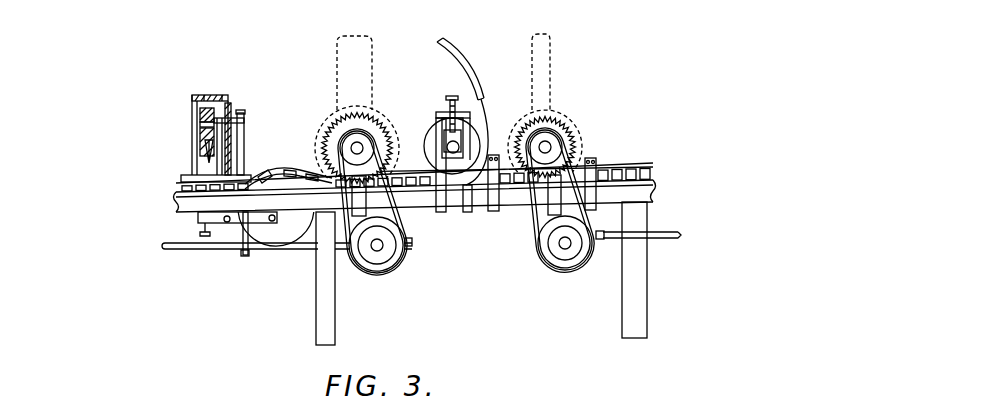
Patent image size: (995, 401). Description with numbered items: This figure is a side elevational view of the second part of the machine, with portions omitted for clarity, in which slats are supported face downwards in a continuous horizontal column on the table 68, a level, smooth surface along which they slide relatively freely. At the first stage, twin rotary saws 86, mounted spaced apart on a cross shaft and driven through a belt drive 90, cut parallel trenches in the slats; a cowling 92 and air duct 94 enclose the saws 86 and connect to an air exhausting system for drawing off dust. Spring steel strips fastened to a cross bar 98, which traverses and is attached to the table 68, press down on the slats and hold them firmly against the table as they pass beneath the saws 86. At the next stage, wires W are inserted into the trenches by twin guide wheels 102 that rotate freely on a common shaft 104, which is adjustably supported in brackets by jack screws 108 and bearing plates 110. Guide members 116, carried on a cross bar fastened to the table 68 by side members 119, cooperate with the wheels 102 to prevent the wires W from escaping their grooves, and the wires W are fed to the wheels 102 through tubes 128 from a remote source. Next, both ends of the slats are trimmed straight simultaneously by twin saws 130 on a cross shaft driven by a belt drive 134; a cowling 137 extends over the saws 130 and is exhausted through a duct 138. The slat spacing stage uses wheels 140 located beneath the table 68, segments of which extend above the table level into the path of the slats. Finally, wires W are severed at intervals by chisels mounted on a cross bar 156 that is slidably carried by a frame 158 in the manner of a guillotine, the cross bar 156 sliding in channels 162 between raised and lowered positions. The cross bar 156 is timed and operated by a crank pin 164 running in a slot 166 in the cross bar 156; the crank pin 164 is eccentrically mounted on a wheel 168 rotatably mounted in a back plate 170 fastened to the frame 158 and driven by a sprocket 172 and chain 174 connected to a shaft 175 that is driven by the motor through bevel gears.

The table 68 is at (176, 194).
The rotary saws 86 is at (569, 143).
The belt drive 90 is at (540, 218).
The cowling 92 is at (551, 114).
The air duct 94 is at (550, 57).
The cross bar 98 is at (597, 161).
The guide wheels 102 is at (432, 150).
The common shaft 104 is at (445, 133).
The jack screws 108 is at (449, 95).
The bearing plates 110 is at (441, 112).
The guide members 116 is at (493, 154).
The side members 119 is at (493, 210).
The tubes 128 is at (448, 58).
The wires W is at (479, 110).
The saws 130 is at (322, 148).
The belt drive 134 is at (398, 240).
The cowling 137 is at (333, 117).
The duct 138 is at (338, 59).
The wheels 140 is at (272, 246).
The cross bar 156 is at (194, 110).
The frame 158 is at (194, 97).
The channels 162 is at (215, 95).
The crank pin 164 is at (205, 116).
The slot 166 is at (205, 125).
The wheel 168 is at (209, 142).
The back plate 170 is at (231, 108).
The sprocket 172 is at (245, 127).
The chain 174 is at (245, 257).
The shaft 175 is at (337, 262).